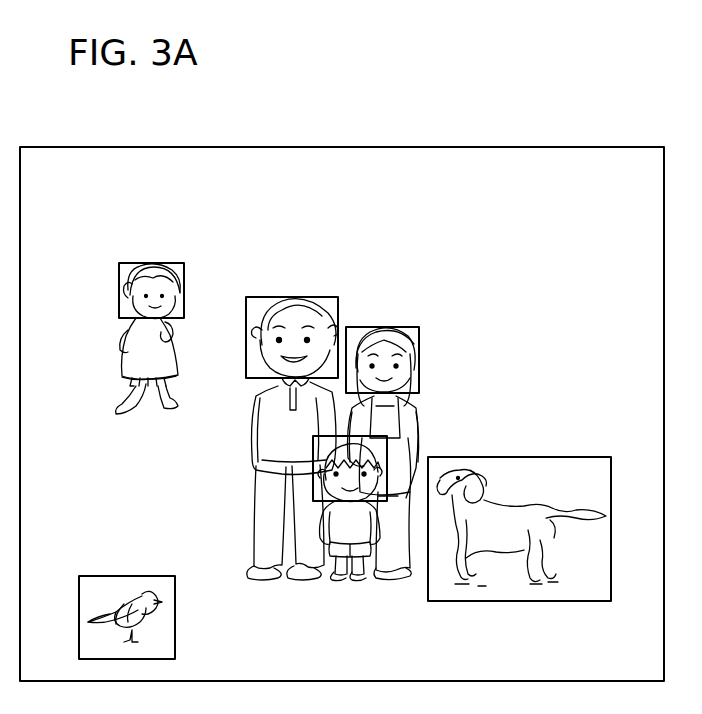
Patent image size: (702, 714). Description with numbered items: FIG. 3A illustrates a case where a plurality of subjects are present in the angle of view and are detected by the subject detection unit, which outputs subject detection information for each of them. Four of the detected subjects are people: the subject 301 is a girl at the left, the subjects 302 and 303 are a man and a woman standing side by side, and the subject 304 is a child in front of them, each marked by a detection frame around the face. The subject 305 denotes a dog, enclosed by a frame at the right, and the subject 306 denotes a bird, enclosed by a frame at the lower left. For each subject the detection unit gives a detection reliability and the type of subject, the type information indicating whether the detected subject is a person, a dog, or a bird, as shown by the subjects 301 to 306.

The subject (person) 301 is at (198, 246).
The subject (person) 302 is at (350, 282).
The subject (person) 303 is at (436, 312).
The subject (person) 304 is at (388, 452).
The subject (dog) 305 is at (568, 457).
The subject (bird) 306 is at (146, 575).